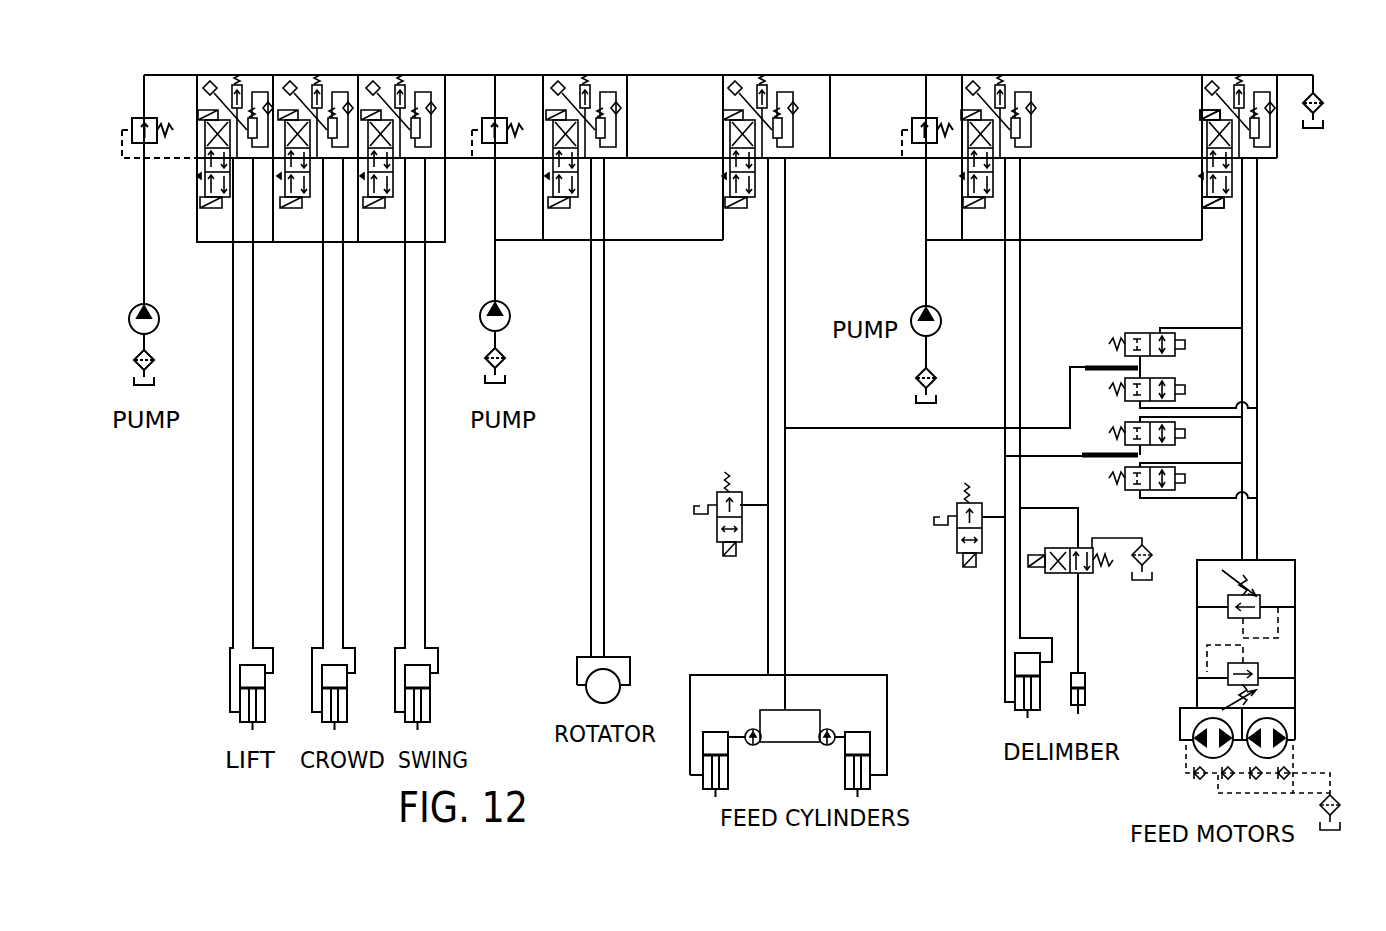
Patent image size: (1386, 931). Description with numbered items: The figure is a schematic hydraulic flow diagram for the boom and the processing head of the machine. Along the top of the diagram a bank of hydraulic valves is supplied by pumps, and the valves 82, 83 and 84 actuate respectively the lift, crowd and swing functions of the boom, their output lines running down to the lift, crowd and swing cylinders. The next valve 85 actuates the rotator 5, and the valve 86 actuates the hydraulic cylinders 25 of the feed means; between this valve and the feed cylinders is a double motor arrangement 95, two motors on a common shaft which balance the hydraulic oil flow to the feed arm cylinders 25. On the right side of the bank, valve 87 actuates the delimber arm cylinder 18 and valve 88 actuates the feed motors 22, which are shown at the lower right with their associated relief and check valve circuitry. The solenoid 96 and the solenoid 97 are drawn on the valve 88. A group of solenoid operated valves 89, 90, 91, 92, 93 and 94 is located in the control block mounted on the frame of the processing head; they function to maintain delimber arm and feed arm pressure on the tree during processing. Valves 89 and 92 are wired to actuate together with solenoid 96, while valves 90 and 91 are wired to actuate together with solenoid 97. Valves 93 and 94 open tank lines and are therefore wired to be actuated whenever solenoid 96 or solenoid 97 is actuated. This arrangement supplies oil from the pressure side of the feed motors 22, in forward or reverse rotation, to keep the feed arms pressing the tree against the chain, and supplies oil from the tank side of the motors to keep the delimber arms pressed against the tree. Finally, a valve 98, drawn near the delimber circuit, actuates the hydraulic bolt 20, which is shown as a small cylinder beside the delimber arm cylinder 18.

The hydraulic valve 82 is at (207, 76).
The hydraulic valve 83 is at (290, 75).
The hydraulic valve 84 is at (383, 75).
The valve 85 is at (567, 75).
The valve 86 is at (742, 75).
The valve 87 is at (977, 75).
The valve 88 is at (1213, 75).
The solenoid operated valve 89 is at (1153, 333).
The solenoid operated valve 90 is at (1175, 384).
The solenoid operated valve 91 is at (1170, 430).
The solenoid operated valve 92 is at (1172, 466).
The solenoid operated valve 93 is at (957, 512).
The solenoid operated valve 94 is at (717, 503).
The double motor arrangement 95 is at (800, 710).
The solenoid 96 is at (1208, 112).
The solenoid 97 is at (1208, 201).
The valve 98 is at (1086, 576).
The hydraulic bolt 20 is at (1088, 696).
The delimber arm cylinder 18 is at (1013, 706).
The feed motors 22 is at (1270, 729).
The hydraulic cylinders 25 is at (710, 740).
The rotator 5 is at (586, 692).